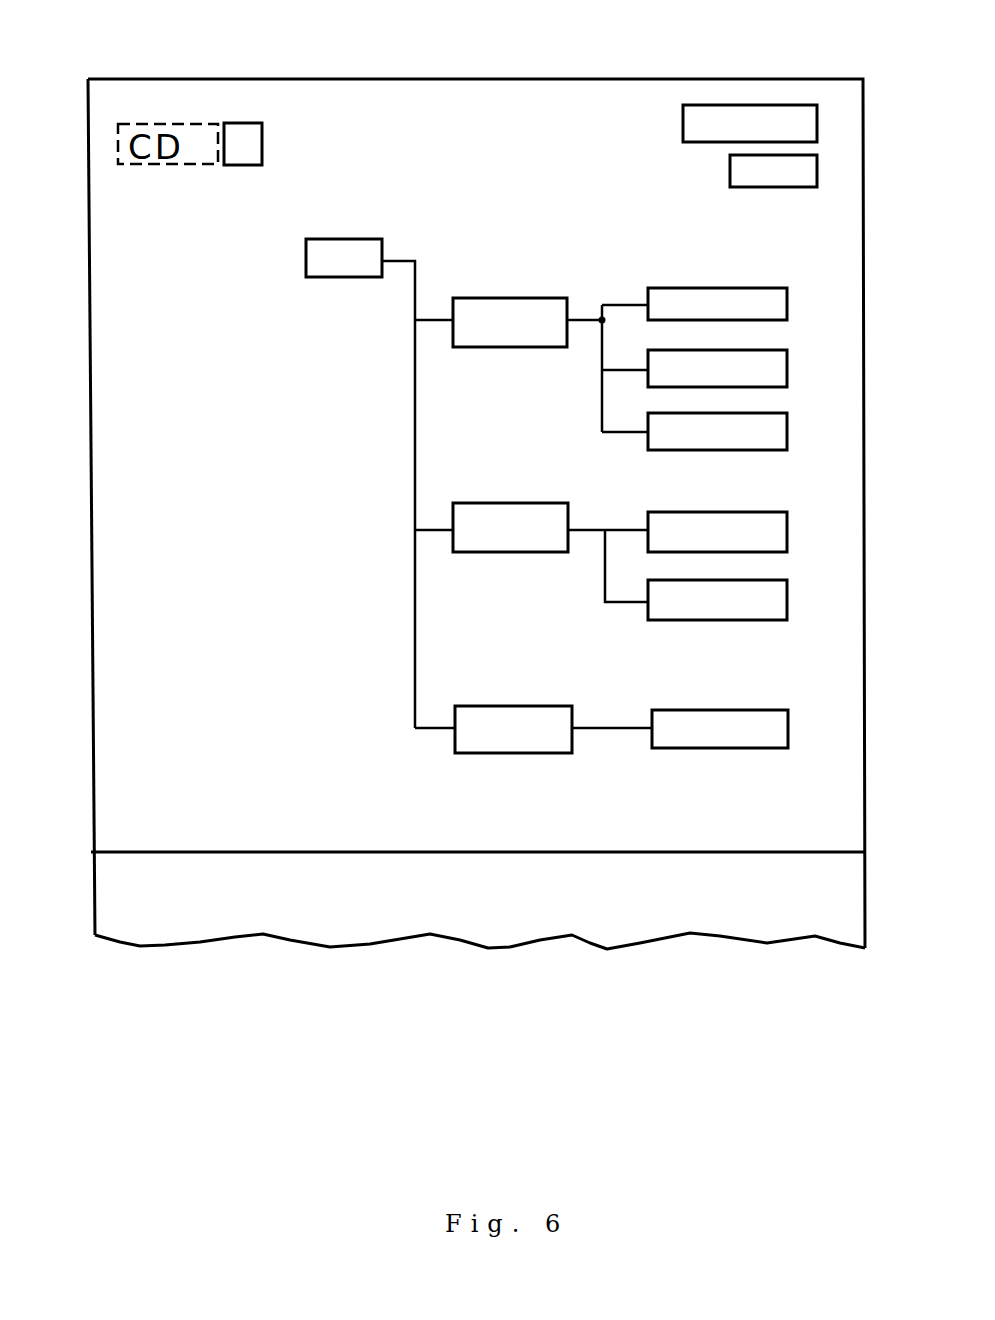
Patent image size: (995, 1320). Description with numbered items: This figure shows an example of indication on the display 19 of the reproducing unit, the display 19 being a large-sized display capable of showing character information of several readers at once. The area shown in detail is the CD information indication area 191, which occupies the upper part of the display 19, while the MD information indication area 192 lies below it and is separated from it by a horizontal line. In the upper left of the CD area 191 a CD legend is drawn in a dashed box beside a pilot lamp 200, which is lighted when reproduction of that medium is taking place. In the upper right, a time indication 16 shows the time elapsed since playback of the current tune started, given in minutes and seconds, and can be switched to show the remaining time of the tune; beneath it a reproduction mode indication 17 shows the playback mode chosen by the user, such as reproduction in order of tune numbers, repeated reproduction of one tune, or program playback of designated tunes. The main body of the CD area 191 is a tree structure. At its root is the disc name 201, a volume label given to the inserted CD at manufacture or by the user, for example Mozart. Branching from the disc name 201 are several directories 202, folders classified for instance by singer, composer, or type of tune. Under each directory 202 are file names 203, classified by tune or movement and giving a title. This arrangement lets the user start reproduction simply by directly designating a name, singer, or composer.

The display 19 is at (171, 79).
The CD information indication area 191 is at (102, 263).
The MD information indication area 192 is at (112, 880).
The pilot lamp 200 is at (243, 128).
The disc name 201 is at (343, 243).
The directory 202 is at (515, 302).
The file name 203 is at (725, 292).
The time elapsed 16 is at (800, 105).
The reproduction mode 17 is at (810, 175).